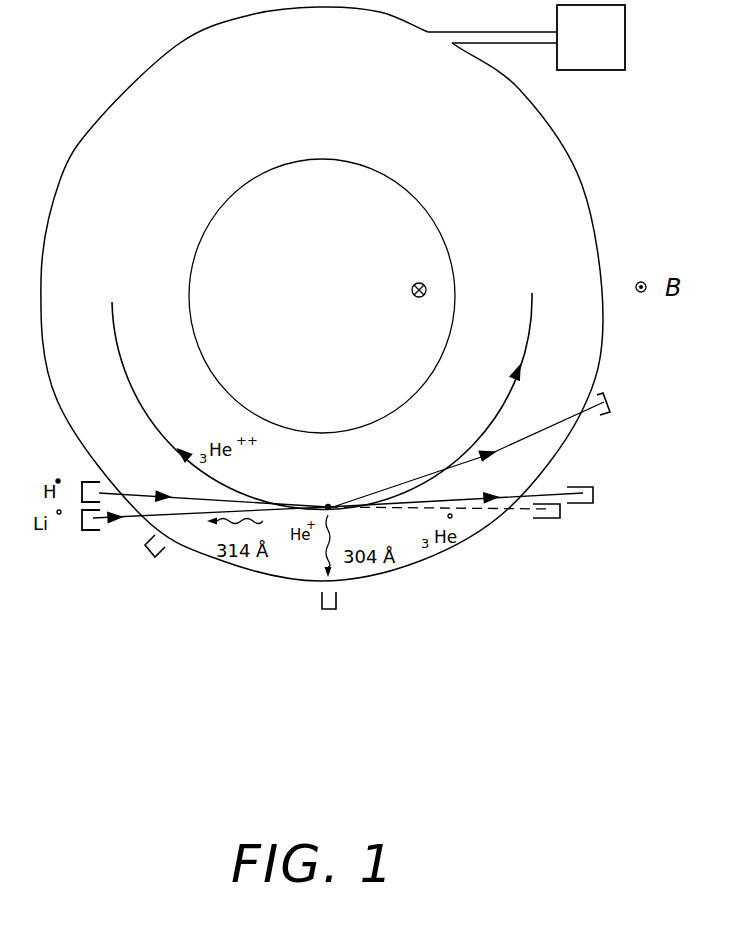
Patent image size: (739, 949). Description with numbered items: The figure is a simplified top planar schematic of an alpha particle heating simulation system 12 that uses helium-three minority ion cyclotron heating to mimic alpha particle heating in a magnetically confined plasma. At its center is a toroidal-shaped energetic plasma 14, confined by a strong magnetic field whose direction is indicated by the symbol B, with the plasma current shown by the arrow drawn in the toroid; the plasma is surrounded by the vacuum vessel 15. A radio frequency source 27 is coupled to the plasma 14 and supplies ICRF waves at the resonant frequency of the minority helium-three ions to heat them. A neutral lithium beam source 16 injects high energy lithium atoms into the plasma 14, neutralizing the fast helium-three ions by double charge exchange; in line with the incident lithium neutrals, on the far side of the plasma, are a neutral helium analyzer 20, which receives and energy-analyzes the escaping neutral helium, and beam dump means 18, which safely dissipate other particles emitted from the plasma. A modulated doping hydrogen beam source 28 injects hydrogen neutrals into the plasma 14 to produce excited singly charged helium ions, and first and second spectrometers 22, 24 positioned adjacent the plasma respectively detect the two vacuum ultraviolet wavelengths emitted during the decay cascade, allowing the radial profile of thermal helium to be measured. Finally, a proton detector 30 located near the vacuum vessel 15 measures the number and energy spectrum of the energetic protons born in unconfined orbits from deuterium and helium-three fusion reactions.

The alpha particle heating simulation system 12 is at (505, 607).
The toroidal-shaped energetic plasma 14 is at (135, 280).
The vacuum vessel 15 is at (582, 185).
The neutral lithium beam source 16 is at (90, 532).
The beam dump means 18 is at (588, 482).
The neutral helium analyzer 20 is at (550, 518).
The first spectrometer 22 is at (328, 610).
The second spectrometer 24 is at (145, 558).
The radio frequency source 27 is at (610, 53).
The modulated doping hydrogen beam source 28 is at (85, 481).
The proton detector 30 is at (597, 395).